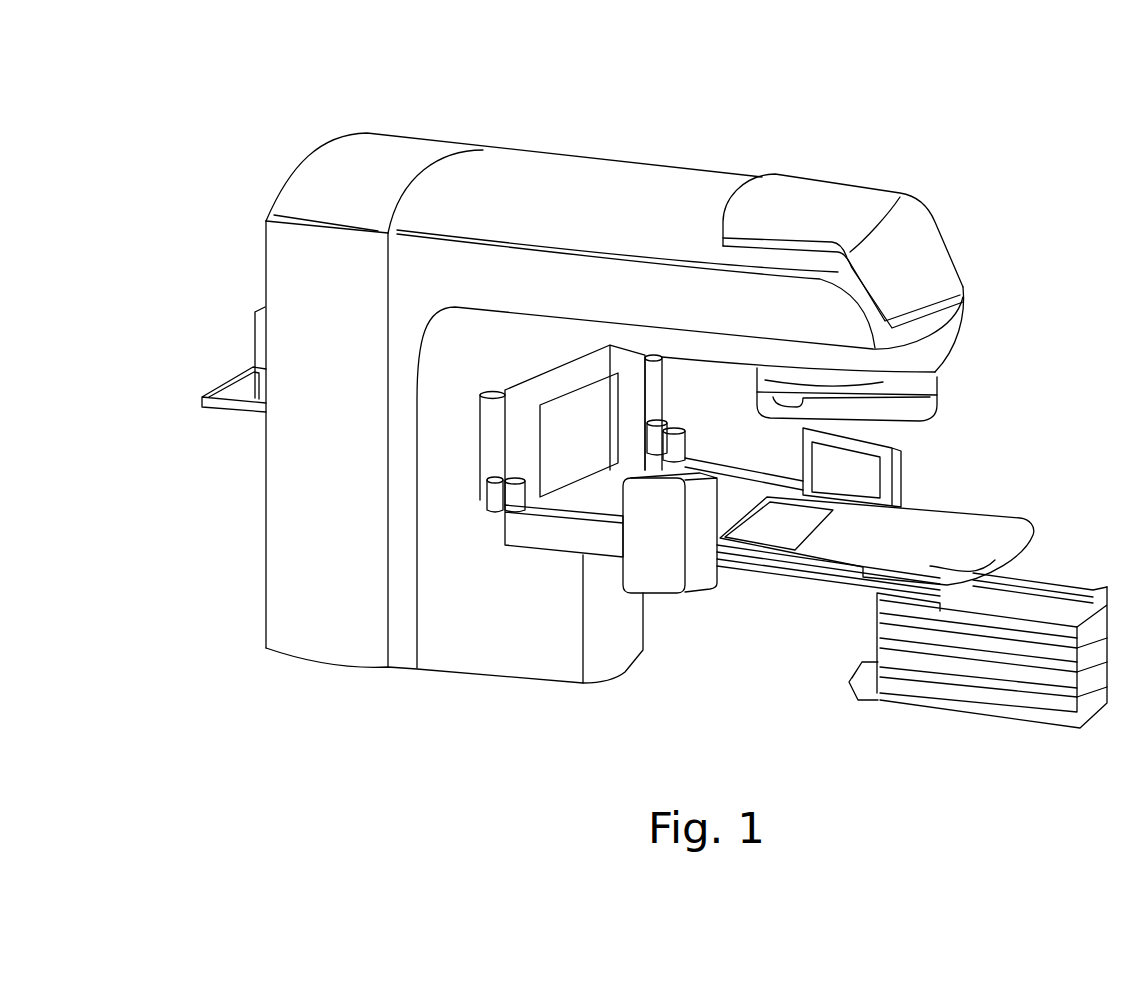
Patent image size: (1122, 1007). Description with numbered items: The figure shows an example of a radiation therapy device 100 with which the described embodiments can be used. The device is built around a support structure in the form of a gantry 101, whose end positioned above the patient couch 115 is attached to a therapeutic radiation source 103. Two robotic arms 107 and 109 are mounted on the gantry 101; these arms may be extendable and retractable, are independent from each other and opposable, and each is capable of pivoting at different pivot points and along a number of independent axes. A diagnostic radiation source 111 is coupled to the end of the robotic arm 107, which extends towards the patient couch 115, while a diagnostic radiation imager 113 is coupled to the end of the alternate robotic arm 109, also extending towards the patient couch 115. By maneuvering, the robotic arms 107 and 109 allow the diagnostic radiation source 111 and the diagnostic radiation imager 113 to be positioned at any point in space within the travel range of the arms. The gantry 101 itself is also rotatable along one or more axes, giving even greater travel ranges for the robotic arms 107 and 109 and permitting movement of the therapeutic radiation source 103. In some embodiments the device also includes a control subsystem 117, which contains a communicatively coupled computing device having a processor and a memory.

The radiation therapy device 100 is at (998, 51).
The gantry 101 is at (558, 186).
The therapeutic radiation source 103 is at (947, 381).
The robotic arm 107 is at (547, 558).
The robotic arm 109 is at (743, 452).
The diagnostic radiation source 111 is at (635, 603).
The diagnostic radiation imager 113 is at (915, 480).
The patient couch 115 is at (1013, 512).
The control subsystem 117 is at (267, 284).